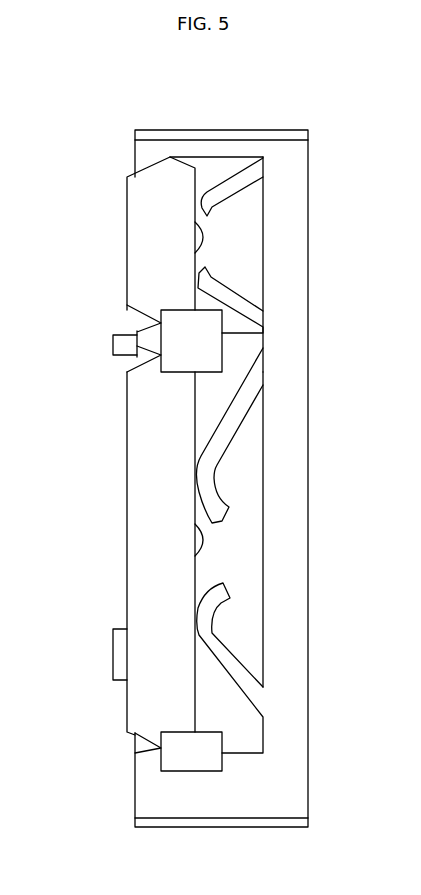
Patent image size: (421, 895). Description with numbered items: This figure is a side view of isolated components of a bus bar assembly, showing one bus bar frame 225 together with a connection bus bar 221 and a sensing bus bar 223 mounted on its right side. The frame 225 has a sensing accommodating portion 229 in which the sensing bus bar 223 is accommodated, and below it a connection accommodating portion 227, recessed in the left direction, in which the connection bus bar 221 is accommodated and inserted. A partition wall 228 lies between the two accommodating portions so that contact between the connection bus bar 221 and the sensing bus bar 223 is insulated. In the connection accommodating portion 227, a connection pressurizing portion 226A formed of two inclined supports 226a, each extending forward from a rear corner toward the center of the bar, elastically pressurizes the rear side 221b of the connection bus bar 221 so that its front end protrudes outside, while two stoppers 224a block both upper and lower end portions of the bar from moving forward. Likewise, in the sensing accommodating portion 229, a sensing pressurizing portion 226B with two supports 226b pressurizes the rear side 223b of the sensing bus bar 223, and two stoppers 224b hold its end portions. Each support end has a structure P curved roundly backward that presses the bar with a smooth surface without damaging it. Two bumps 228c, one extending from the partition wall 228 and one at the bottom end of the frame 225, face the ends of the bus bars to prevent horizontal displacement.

The bus bar frame 225 is at (299, 118).
The connection bus bar 221 is at (145, 480).
The rear side of the connection bus bar 221b is at (195, 524).
The sensing bus bar 223 is at (127, 200).
The rear side of the sensing bus bar 223b is at (195, 223).
The stopper 224a is at (160, 356).
The stopper 224b is at (127, 176).
The support 226a is at (287, 610).
The support 226b is at (274, 212).
The connection pressurizing portion 226A is at (221, 686).
The sensing pressurizing portion 226B is at (216, 176).
The connection accommodating portion 227 is at (223, 552).
The partition wall 228 is at (135, 338).
The bump 228c is at (197, 345).
The sensing accommodating portion 229 is at (223, 242).
The structure curved roundly backward P is at (210, 213).